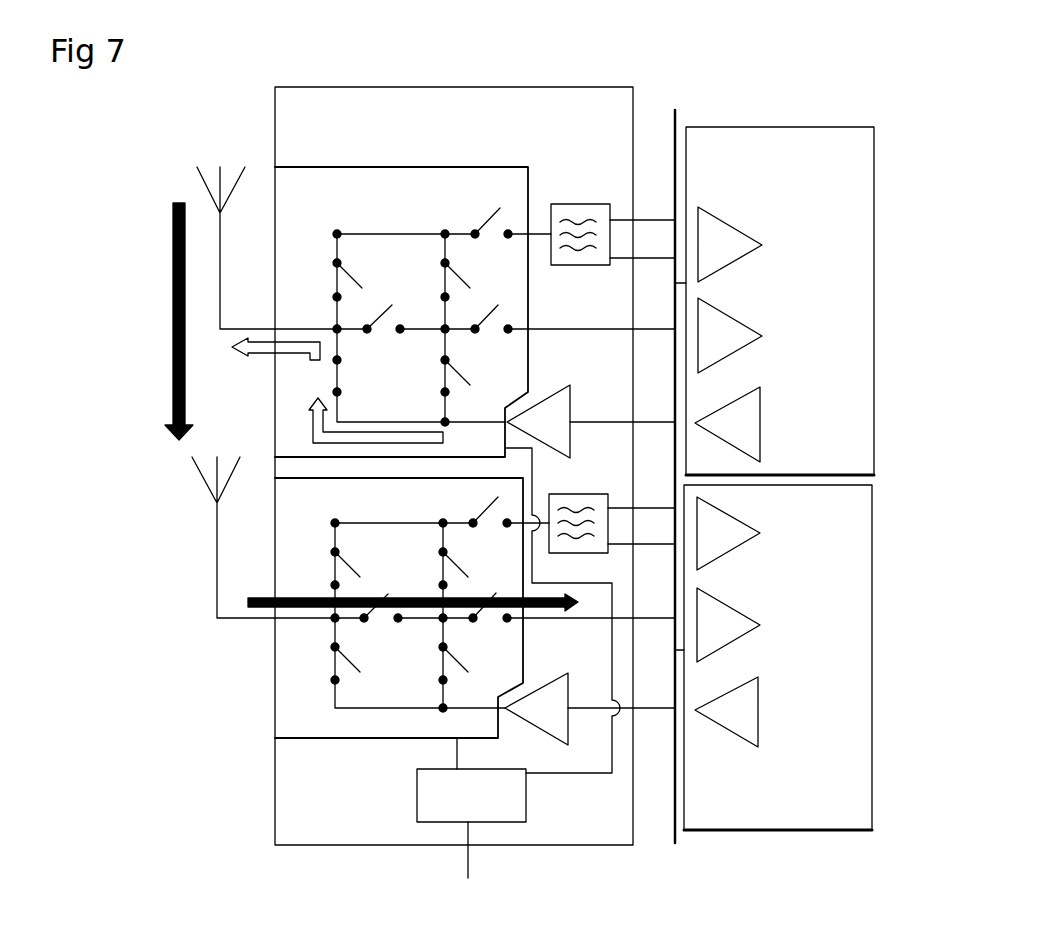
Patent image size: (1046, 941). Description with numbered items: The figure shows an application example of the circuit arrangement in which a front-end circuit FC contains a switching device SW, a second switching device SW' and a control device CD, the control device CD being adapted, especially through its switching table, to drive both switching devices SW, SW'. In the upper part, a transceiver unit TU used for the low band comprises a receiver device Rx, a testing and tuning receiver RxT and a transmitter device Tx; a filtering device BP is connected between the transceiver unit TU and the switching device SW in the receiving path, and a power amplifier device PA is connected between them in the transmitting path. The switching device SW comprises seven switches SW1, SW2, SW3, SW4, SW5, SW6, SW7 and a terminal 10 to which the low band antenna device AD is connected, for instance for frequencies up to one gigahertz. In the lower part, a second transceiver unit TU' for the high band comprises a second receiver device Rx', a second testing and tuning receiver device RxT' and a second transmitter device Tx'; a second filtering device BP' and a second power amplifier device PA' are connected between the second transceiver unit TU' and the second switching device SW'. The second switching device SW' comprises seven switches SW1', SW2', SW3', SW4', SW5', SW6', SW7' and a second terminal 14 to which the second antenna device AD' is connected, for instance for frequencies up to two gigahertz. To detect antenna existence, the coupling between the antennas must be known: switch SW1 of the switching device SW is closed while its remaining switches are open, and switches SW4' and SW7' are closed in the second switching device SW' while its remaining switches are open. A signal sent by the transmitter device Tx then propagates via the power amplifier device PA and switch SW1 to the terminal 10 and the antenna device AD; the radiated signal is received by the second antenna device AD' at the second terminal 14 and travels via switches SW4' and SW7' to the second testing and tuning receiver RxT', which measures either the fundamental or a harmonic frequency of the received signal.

The front-end circuit FC is at (457, 87).
The switching device SW is at (475, 290).
The second switching device SW' is at (475, 643).
The first switch SW1 is at (314, 376).
The second switch SW2 is at (478, 378).
The third switch SW3 is at (325, 280).
The fourth switch SW4 is at (389, 307).
The fifth switch SW5 is at (479, 281).
The sixth switch SW6 is at (491, 211).
The seventh switch SW7 is at (493, 336).
The first switch of second switching device SW1' is at (322, 663).
The second switch of second switching device SW2' is at (478, 664).
The third switch of second switching device SW3' is at (322, 568).
The fourth switch of second switching device SW4' is at (389, 597).
The fifth switch of second switching device SW5' is at (479, 570).
The sixth switch of second switching device SW6' is at (491, 531).
The seventh switch of second switching device SW7' is at (492, 624).
The antenna device AD is at (221, 248).
The second antenna device AD' is at (220, 537).
The terminal 10 is at (272, 329).
The second terminal 14 is at (272, 620).
The filtering device BP is at (613, 218).
The second filtering device BP' is at (612, 507).
The power amplifier device PA is at (591, 403).
The second power amplifier device PA' is at (590, 692).
The transceiver unit TU is at (788, 280).
The second transceiver unit TU' is at (778, 680).
The receiver device Rx is at (733, 239).
The testing and tuning receiver RxT is at (747, 329).
The transmitter device Tx is at (757, 427).
The second receiver device Rx' is at (743, 532).
The second testing and tuning receiver device RxT' is at (744, 618).
The second transmitter device Tx' is at (723, 734).
The control device CD is at (530, 795).